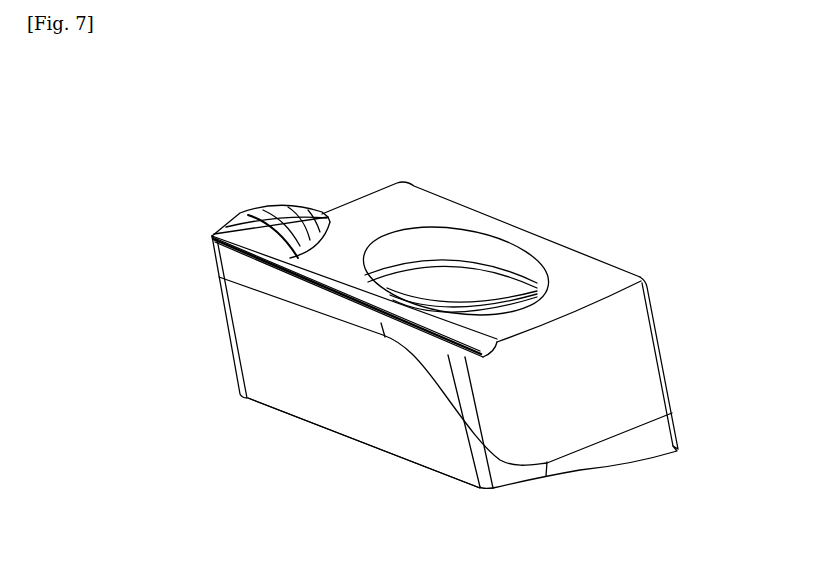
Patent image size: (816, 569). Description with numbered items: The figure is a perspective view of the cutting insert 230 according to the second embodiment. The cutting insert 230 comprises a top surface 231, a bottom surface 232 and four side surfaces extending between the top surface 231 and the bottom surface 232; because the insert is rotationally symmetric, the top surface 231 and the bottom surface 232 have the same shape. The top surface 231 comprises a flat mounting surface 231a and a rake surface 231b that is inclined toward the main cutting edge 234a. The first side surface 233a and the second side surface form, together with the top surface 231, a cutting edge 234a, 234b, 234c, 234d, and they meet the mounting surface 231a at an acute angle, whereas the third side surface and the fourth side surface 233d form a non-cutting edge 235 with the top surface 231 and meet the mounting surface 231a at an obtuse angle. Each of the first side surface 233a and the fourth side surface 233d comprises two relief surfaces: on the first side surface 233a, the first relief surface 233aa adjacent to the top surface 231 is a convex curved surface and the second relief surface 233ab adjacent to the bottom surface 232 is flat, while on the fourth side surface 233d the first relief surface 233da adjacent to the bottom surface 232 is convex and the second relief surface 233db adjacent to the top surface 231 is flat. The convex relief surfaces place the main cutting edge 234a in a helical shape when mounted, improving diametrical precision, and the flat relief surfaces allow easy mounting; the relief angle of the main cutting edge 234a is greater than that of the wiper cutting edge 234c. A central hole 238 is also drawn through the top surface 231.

The cutting insert 230 is at (266, 141).
The top surface 231 is at (641, 170).
The mounting surface 231a is at (509, 231).
The rake surface 231b is at (463, 330).
The bottom surface 232 is at (436, 476).
The first side surface 233a is at (120, 262).
The first relief surface of the first side surface 233aa is at (227, 260).
The second relief surface of the first side surface 233ab is at (240, 320).
The fourth side surface 233d is at (741, 325).
The first relief surface of the fourth side surface 233da is at (662, 434).
The second relief surface of the fourth side surface 233db is at (643, 362).
The main cutting edge 234a is at (335, 292).
The cutting edge 234b is at (209, 234).
The wiper cutting edge 234c is at (236, 213).
The cutting edge 234d is at (346, 203).
The non-cutting edge 235 is at (468, 203).
The fastening hole 238 is at (438, 242).